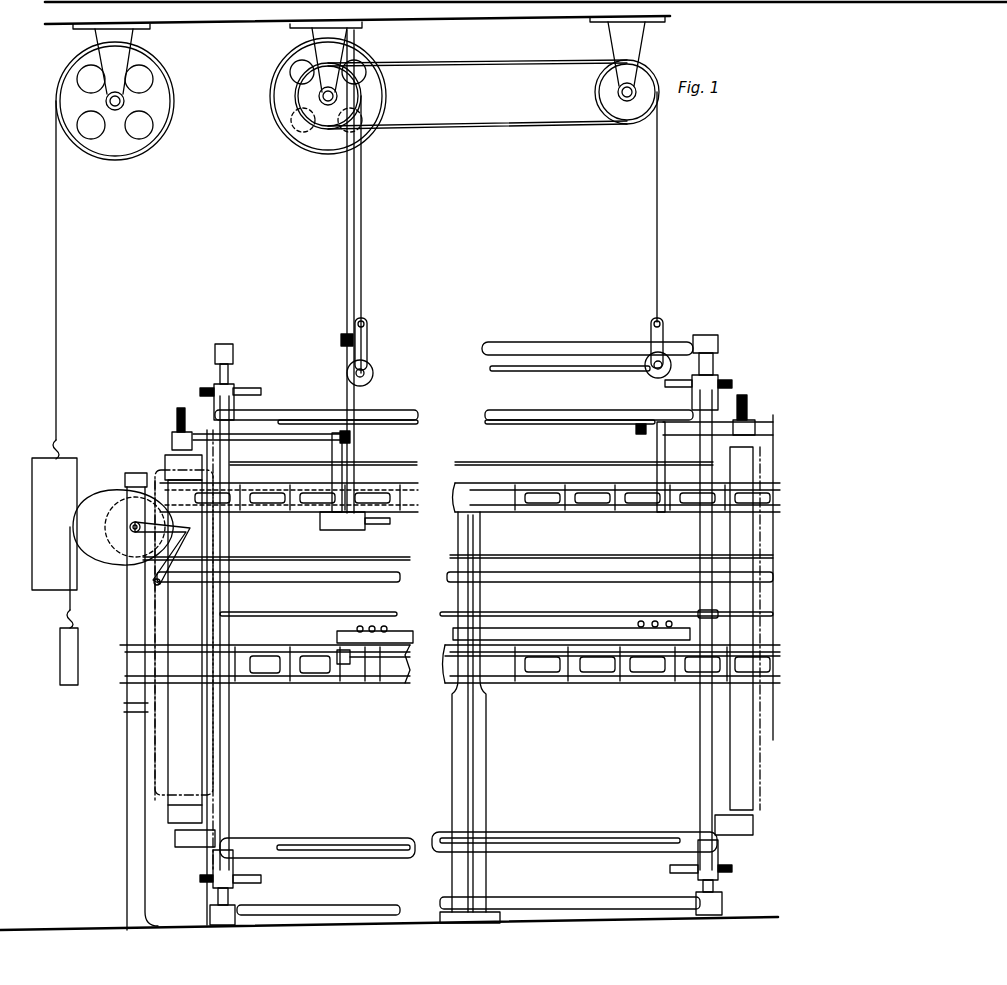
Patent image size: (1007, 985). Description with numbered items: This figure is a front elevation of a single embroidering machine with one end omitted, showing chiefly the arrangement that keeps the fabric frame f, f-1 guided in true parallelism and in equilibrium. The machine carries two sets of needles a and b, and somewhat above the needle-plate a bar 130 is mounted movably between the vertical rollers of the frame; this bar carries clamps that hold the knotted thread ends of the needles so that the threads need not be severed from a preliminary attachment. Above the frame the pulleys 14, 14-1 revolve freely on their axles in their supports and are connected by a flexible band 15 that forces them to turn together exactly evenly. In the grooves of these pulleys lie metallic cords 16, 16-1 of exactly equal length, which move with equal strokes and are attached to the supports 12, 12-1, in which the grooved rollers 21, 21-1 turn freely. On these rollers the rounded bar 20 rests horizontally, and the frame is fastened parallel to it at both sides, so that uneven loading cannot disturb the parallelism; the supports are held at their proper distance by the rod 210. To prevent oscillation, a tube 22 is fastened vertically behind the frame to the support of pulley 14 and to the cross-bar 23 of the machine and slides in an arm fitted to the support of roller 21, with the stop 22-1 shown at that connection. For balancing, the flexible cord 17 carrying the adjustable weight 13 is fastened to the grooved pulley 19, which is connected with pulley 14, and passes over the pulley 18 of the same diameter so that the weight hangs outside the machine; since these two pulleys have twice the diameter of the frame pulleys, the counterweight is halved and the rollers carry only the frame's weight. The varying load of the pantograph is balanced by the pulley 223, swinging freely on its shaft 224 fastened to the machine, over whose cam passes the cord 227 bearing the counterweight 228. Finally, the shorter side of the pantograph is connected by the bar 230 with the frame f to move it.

The pulley 18 is at (115, 102).
The grooved pulley 19 is at (289, 131).
The pulley 14 is at (322, 128).
The pulley 14-1 is at (627, 83).
The flexible band 15 is at (472, 124).
The flexible cord 17 is at (67, 280).
The adjustable weight 13 is at (40, 590).
The metallic cord 16 is at (373, 234).
The metallic cord 16-1 is at (678, 207).
The tube 22 is at (346, 270).
The stop 22-1 is at (342, 338).
The support 12 is at (367, 338).
The support 12-1 is at (664, 334).
The grooved roller 21 is at (346, 377).
The grooved roller 21-1 is at (653, 372).
The rounded bar 20 is at (566, 345).
The rod 210 is at (514, 367).
The bar 130 is at (521, 462).
The cross-bar 23 is at (338, 470).
The set of needles a is at (470, 497).
The set of needles b is at (450, 664).
The bar 230 is at (465, 577).
The frame f is at (231, 549).
The frame f-1 is at (530, 906).
The pulley 223 is at (122, 503).
The shaft 224 is at (146, 553).
The cord 227 is at (72, 600).
The counterweight 228 is at (66, 672).